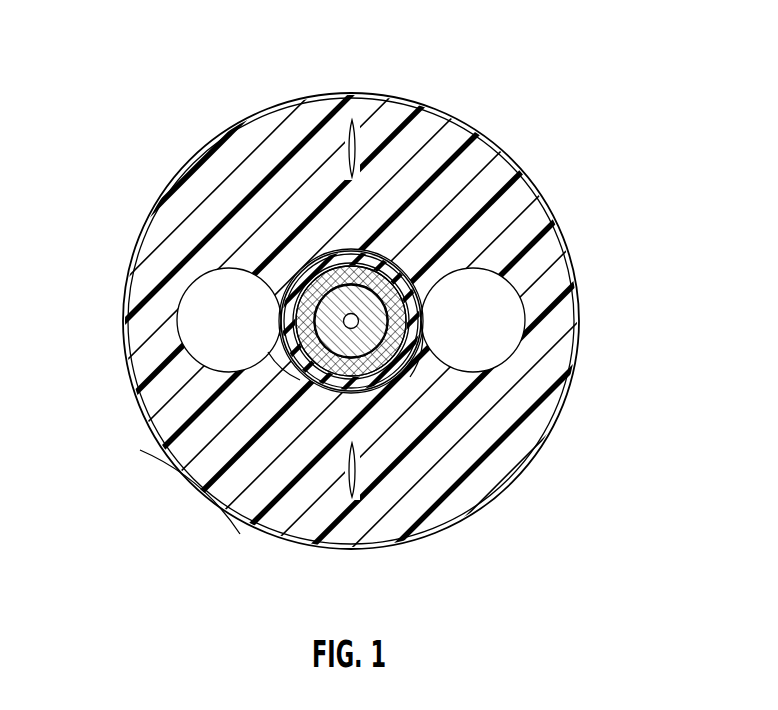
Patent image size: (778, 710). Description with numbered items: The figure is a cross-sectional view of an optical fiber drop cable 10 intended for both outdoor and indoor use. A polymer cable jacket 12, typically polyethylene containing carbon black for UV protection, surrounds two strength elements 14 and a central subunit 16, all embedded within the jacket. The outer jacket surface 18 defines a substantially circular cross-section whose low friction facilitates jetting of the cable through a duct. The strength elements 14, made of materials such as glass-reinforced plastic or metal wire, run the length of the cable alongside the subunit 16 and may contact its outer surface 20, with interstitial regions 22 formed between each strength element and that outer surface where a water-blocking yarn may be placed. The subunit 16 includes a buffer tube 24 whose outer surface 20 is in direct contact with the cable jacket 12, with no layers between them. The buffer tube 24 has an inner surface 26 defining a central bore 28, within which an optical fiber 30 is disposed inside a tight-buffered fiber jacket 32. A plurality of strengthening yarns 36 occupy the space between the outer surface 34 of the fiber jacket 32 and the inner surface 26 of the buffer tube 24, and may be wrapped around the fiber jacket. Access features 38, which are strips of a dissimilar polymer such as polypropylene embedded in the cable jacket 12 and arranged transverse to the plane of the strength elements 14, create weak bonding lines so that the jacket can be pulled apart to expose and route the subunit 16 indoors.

The optical fiber drop cable 10 is at (204, 100).
The cable jacket 12 is at (428, 138).
The strength elements 14 is at (212, 315).
The subunit 16 is at (407, 258).
The outer jacket surface 18 is at (200, 485).
The outer surface of the subunit 20 is at (262, 356).
The interstitial regions 22 is at (278, 258).
The buffer tube 24 is at (330, 265).
The inner surface of the buffer tube 26 is at (385, 372).
The central bore 28 is at (333, 386).
The optical fiber 30 is at (360, 318).
The tight-buffered fiber jacket 32 is at (325, 311).
The outer surface of the fiber jacket 34 is at (405, 372).
The strengthening yarns 36 is at (403, 367).
The access features 38 is at (349, 120).